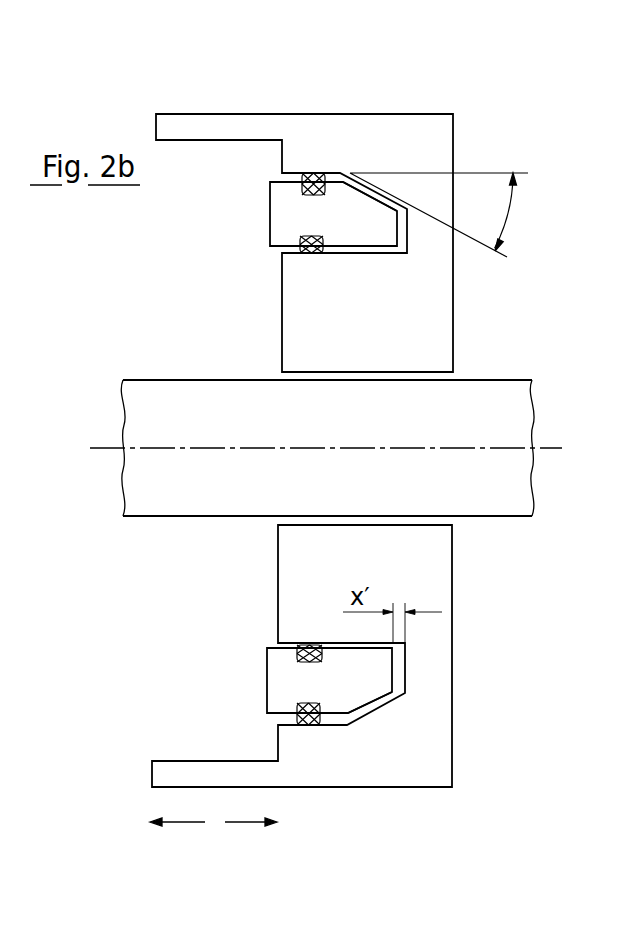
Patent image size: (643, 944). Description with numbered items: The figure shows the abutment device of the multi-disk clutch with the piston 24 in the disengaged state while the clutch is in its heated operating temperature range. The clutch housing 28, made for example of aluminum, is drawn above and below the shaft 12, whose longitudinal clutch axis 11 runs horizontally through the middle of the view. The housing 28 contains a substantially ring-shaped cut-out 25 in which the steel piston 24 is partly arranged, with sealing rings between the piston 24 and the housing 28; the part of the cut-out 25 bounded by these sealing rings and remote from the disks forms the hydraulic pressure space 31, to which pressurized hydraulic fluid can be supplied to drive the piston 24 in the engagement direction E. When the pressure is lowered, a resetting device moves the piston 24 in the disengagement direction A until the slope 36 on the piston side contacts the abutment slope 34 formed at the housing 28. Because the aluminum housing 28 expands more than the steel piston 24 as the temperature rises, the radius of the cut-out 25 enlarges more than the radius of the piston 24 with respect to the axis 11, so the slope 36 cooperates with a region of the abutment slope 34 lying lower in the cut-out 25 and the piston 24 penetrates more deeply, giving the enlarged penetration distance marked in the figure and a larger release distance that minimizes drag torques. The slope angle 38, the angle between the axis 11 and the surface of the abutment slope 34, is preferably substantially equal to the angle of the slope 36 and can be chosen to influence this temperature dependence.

The clutch housing 28 is at (380, 114).
The piston 24 is at (268, 213).
The hydraulic pressure space 31 is at (401, 231).
The slope angle 38 is at (513, 213).
The shaft 12 is at (513, 380).
The longitudinal clutch axis 11 is at (537, 448).
The abutment slope 34 is at (359, 720).
The cut-out 25 is at (397, 668).
The slope 36 is at (373, 702).
The engagement direction E is at (183, 822).
The disengagement direction A is at (238, 822).